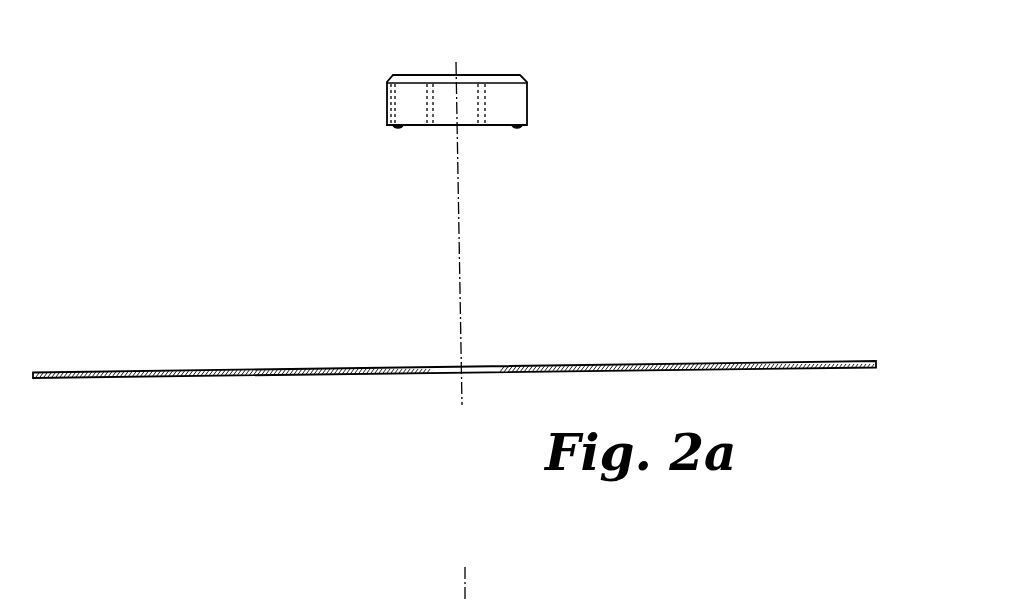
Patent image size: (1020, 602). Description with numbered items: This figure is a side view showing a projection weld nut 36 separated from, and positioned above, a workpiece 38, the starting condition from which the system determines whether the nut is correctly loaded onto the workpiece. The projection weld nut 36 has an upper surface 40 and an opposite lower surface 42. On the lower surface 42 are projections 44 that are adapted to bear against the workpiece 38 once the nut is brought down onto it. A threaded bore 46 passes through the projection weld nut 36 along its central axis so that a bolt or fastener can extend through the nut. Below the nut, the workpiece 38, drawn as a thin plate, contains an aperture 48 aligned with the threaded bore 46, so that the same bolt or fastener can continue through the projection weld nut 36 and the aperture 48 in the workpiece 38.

The projection weld nut 36 is at (508, 90).
The workpiece 38 is at (581, 365).
The upper surface 40 is at (495, 75).
The lower surface 42 is at (468, 127).
The projections 44 is at (520, 130).
The threaded bore 46 is at (455, 75).
The aperture 48 is at (462, 367).